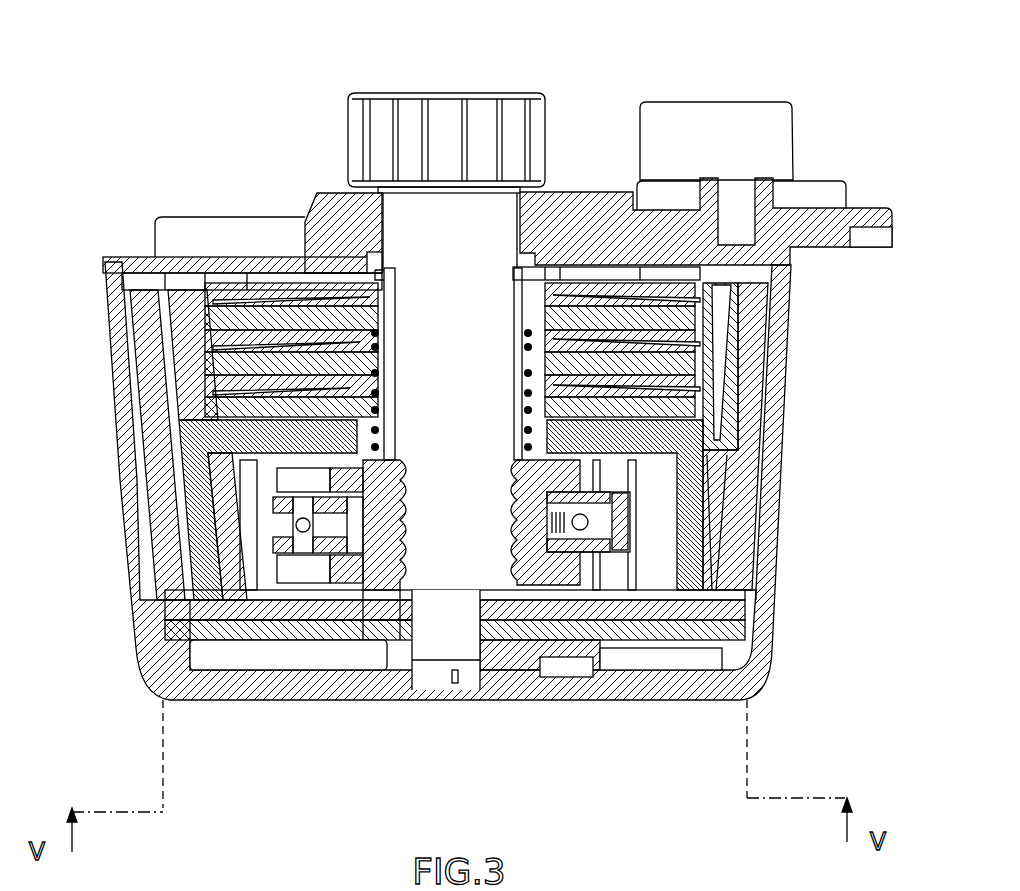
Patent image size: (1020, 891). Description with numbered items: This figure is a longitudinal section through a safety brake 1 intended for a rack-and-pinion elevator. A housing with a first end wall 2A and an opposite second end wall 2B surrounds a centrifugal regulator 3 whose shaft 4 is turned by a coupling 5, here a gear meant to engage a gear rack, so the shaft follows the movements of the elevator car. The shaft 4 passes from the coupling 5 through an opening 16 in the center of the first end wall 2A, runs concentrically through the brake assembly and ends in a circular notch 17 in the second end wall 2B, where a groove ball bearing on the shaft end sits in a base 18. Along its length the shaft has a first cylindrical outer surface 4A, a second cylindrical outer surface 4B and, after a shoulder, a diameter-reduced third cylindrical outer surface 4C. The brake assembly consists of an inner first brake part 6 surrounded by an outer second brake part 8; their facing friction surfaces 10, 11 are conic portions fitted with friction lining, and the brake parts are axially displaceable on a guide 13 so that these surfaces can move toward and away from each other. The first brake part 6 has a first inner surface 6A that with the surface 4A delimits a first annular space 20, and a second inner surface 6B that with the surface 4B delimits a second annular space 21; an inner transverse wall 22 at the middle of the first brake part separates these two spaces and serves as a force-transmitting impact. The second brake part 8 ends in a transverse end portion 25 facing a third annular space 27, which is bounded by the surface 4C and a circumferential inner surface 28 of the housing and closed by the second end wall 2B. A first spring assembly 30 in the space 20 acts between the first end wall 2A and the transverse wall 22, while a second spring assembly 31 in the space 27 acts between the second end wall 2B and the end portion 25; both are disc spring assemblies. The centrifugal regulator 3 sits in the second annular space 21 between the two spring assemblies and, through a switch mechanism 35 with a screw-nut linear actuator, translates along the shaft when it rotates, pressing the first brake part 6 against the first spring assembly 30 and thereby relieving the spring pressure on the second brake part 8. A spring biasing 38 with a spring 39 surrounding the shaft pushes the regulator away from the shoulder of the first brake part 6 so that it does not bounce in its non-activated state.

The safety brake 1 is at (158, 136).
The first end wall 2A is at (582, 220).
The second end wall 2B is at (632, 692).
The centrifugal regulator 3 is at (626, 569).
The shaft 4 is at (460, 290).
The first cylindrical outer surface 4A is at (392, 290).
The second cylindrical outer surface 4B is at (372, 590).
The third cylindrical outer surface 4C is at (388, 622).
The coupling 5 is at (448, 113).
The first brake part 6 is at (700, 438).
The first inner surface 6A is at (700, 338).
The second inner surface 6B is at (753, 575).
The second brake part 8 is at (745, 541).
The friction surface 10 is at (725, 503).
The friction surface 11 is at (722, 522).
The guide 13 is at (165, 538).
The opening 16 is at (382, 215).
The circular notch 17 is at (438, 668).
The base 18 is at (507, 677).
The first annular space 20 is at (228, 338).
The second annular space 21 is at (265, 490).
The inner transverse wall 22 is at (700, 474).
The transverse end portion 25 is at (745, 633).
The third annular space 27 is at (235, 658).
The inner surface 28 is at (180, 640).
The first spring assembly 30 is at (225, 297).
The second spring assembly 31 is at (262, 608).
The switch mechanism 35 is at (495, 505).
The spring biasing 38 is at (358, 355).
The spring 39 is at (320, 405).